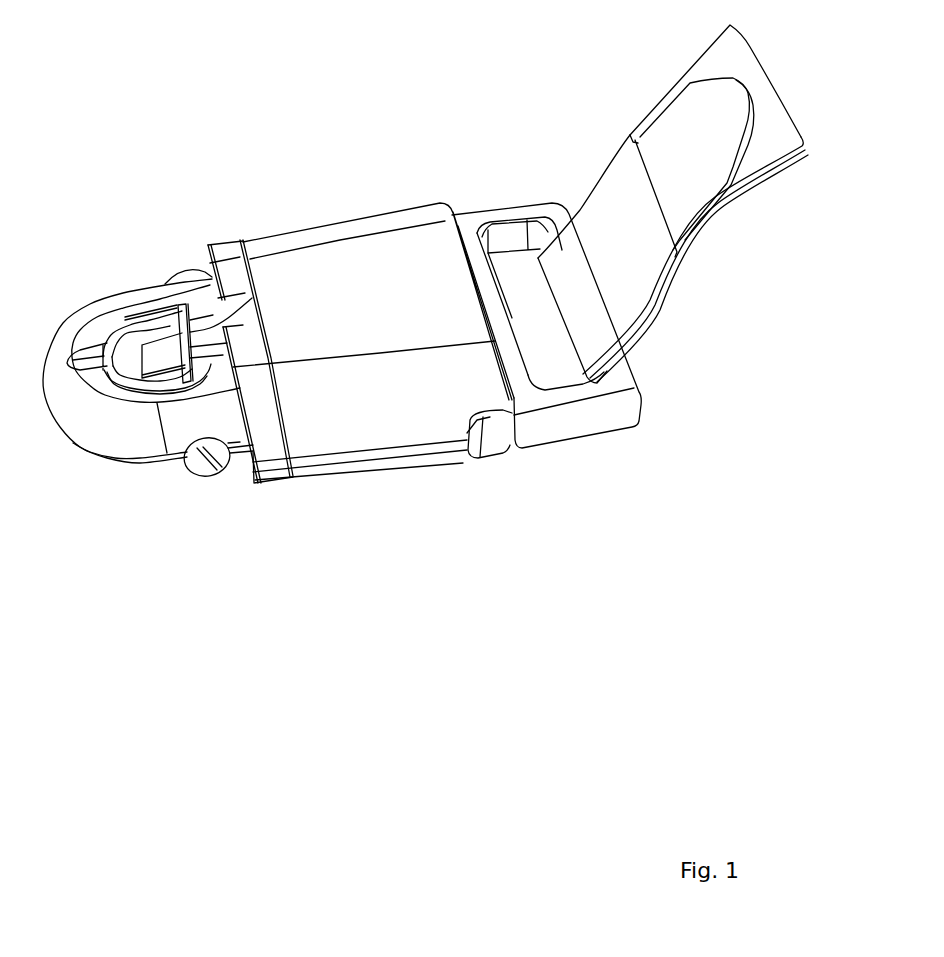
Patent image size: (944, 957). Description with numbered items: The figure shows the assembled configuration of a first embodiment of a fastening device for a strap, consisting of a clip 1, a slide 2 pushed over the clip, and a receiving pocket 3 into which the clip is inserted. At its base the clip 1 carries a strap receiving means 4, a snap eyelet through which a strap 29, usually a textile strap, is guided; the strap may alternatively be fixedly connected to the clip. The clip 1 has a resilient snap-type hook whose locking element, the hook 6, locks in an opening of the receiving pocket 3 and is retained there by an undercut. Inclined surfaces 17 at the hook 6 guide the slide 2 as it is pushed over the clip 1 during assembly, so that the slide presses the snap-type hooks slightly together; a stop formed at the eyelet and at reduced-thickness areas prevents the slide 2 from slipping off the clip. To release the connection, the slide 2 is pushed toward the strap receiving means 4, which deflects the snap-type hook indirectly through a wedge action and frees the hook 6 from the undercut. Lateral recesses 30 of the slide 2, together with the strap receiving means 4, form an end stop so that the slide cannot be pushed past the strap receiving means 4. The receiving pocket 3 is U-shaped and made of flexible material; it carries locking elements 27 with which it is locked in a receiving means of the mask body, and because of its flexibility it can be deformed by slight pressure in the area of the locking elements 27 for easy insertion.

The clip 1 is at (463, 223).
The slide 2 is at (353, 230).
The receiving pocket 3 is at (133, 427).
The strap receiving means 4 is at (563, 373).
The hook 6 is at (175, 302).
The inclined surfaces 17 is at (157, 328).
The locking elements 27 is at (203, 473).
The strap 29 is at (617, 240).
The lateral recesses 30 is at (467, 443).